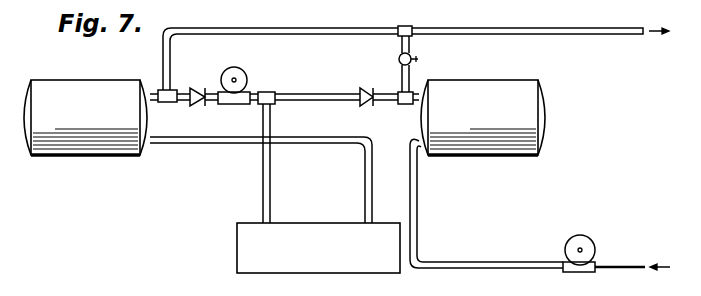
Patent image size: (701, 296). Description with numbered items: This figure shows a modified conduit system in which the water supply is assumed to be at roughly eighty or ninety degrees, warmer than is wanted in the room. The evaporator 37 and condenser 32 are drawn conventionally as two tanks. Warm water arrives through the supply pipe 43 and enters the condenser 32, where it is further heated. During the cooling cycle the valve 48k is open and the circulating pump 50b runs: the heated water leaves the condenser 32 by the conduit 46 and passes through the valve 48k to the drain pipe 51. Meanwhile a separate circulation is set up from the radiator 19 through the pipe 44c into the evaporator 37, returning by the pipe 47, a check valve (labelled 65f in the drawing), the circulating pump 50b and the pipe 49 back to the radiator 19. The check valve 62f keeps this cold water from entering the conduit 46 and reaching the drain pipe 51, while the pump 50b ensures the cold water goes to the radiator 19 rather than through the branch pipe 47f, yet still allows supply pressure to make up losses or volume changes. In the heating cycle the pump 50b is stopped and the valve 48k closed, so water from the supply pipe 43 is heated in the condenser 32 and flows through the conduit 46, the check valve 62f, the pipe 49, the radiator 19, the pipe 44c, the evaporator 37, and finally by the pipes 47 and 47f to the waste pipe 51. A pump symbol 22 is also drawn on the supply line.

The evaporator 37 is at (82, 81).
The condenser 32 is at (499, 82).
The pipe 47 is at (161, 89).
The branch pipe 47f is at (231, 28).
The drain pipe 51 is at (484, 28).
The valve 65f is at (196, 88).
The circulating pump 50b is at (244, 62).
The pipe 49 is at (271, 130).
The check valve 62f is at (366, 89).
The valve 48k is at (398, 58).
The conduit 46 is at (417, 92).
The pipe 44c is at (328, 141).
The radiator 19 is at (237, 248).
The supply pipe 43 is at (478, 263).
The pump 22 is at (590, 239).